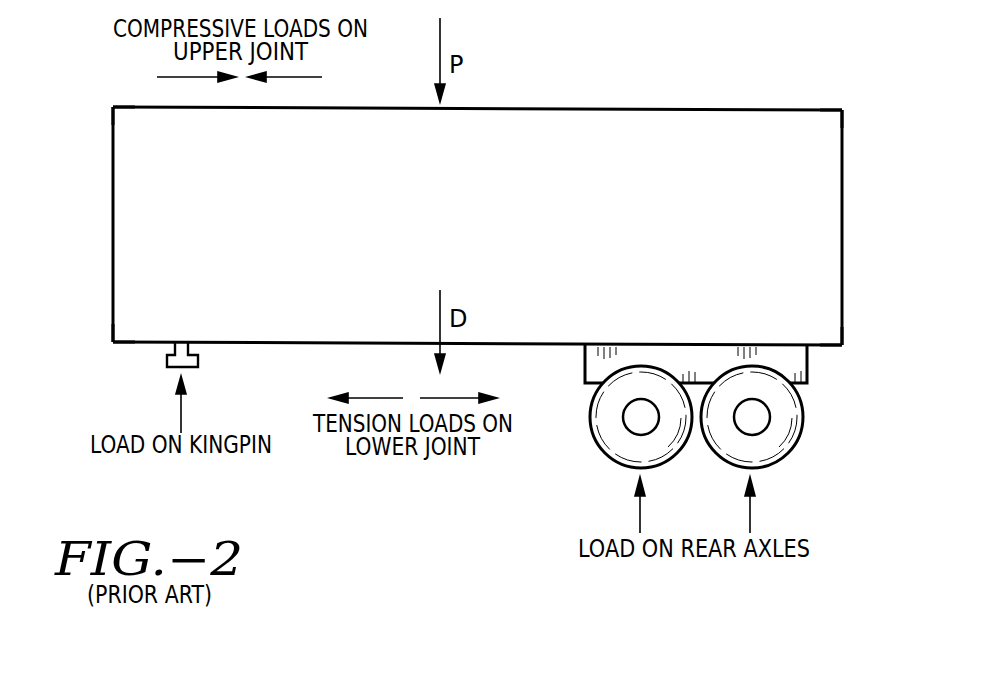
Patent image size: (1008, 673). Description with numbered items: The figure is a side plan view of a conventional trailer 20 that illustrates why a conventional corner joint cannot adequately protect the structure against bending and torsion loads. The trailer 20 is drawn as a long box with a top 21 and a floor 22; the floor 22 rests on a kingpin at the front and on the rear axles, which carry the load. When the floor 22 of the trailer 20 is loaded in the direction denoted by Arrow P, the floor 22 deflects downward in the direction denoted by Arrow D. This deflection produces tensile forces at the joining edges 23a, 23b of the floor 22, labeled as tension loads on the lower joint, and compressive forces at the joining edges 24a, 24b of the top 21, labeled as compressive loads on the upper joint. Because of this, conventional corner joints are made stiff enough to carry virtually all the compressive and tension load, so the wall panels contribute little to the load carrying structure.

The trailer 20 is at (863, 98).
The top 21 is at (272, 108).
The floor 22 is at (652, 345).
The joining edge of the floor 23a is at (115, 340).
The joining edge of the floor 23b is at (837, 342).
The joining edge of the top 24a is at (115, 110).
The joining edge of the top 24b is at (840, 112).